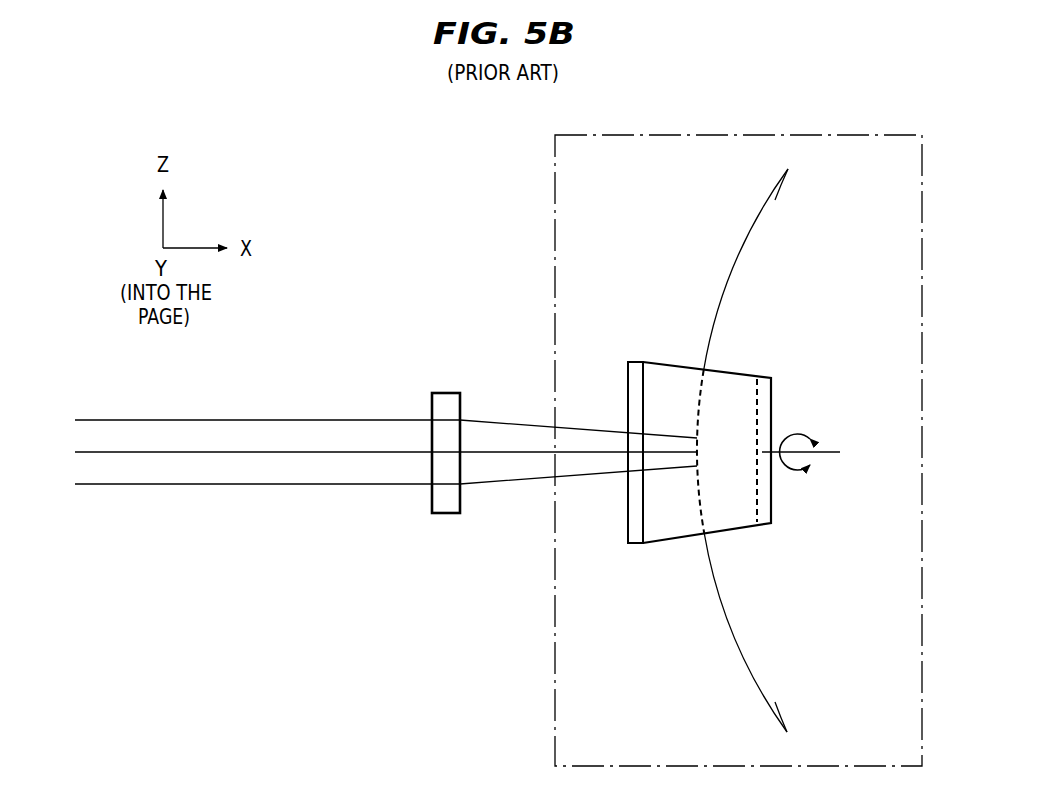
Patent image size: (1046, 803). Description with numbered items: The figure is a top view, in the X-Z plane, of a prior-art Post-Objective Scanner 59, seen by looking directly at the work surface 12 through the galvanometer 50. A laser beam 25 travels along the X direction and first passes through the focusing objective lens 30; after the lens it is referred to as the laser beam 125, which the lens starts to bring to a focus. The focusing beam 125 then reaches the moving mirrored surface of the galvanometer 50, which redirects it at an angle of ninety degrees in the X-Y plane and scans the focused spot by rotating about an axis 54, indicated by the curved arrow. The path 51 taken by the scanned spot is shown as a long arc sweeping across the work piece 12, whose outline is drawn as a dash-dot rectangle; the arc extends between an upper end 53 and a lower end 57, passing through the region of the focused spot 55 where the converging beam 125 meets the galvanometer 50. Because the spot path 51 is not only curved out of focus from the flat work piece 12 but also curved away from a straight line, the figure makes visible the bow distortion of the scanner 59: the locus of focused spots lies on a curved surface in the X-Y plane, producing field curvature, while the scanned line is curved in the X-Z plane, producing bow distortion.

The work piece 12 is at (555, 675).
The laser beam 25 is at (280, 484).
The focusing objective lens 30 is at (432, 405).
The laser beam after passing through lens 125 is at (507, 420).
The galvanometer 50 is at (680, 363).
The scan path 51 is at (730, 275).
The first end of scan path 53 is at (787, 168).
The axis 54 is at (823, 450).
The beam focal point 55 is at (700, 452).
The second end of scan path 57 is at (787, 732).
The Post-Objective Scanner 59 is at (372, 622).